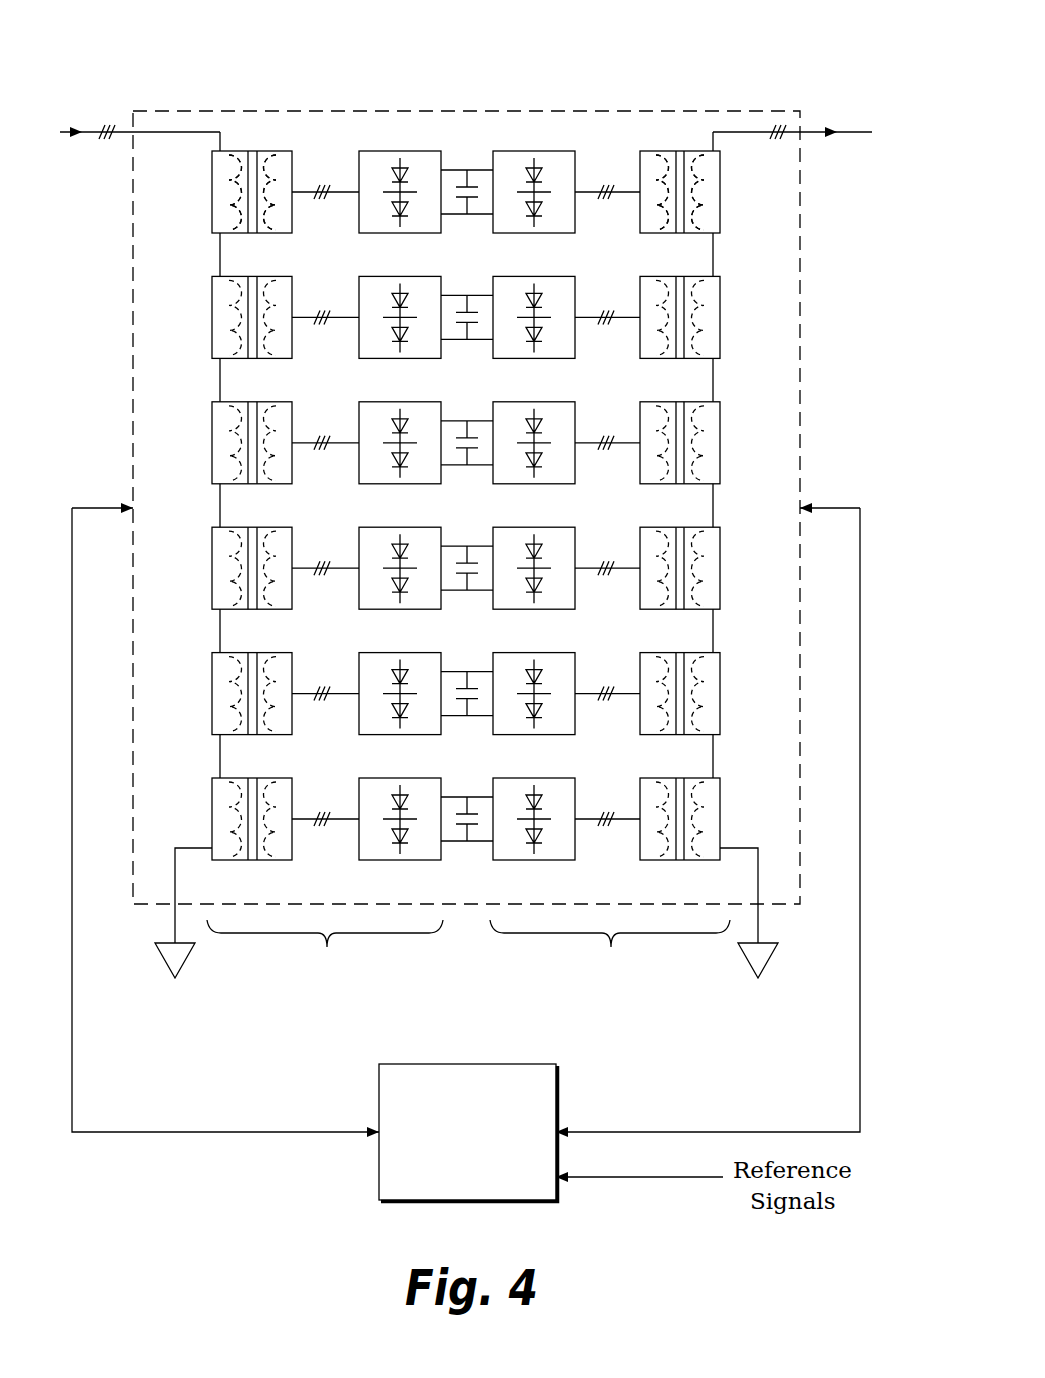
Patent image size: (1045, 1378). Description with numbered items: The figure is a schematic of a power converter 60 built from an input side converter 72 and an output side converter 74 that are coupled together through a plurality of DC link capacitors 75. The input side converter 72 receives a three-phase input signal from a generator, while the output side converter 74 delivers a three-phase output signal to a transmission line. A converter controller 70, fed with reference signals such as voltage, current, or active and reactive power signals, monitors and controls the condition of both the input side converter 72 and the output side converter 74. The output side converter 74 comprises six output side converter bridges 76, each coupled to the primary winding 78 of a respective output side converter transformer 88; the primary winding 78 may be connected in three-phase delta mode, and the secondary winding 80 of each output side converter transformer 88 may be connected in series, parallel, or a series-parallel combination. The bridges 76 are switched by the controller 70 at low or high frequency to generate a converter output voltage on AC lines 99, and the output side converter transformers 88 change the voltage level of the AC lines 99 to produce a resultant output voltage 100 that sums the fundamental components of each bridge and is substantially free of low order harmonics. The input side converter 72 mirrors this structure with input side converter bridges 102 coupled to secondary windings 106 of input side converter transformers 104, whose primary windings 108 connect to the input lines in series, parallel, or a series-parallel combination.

The power converter 60 is at (891, 32).
The converter controller 70 is at (482, 1177).
The input side converter 72 is at (325, 953).
The output side converter 74 is at (610, 953).
The DC link capacitors 75 is at (474, 178).
The output side converter bridges 76 is at (517, 151).
The primary winding 78 is at (640, 166).
The secondary winding 80 is at (721, 166).
The output side converter transformers 88 is at (721, 196).
The AC lines 99 is at (596, 166).
The output voltage 100 is at (819, 145).
The input side converter bridges 102 is at (371, 151).
The input side converter transformers 104 is at (211, 195).
The secondary windings 106 is at (295, 166).
The primary windings 108 is at (208, 166).